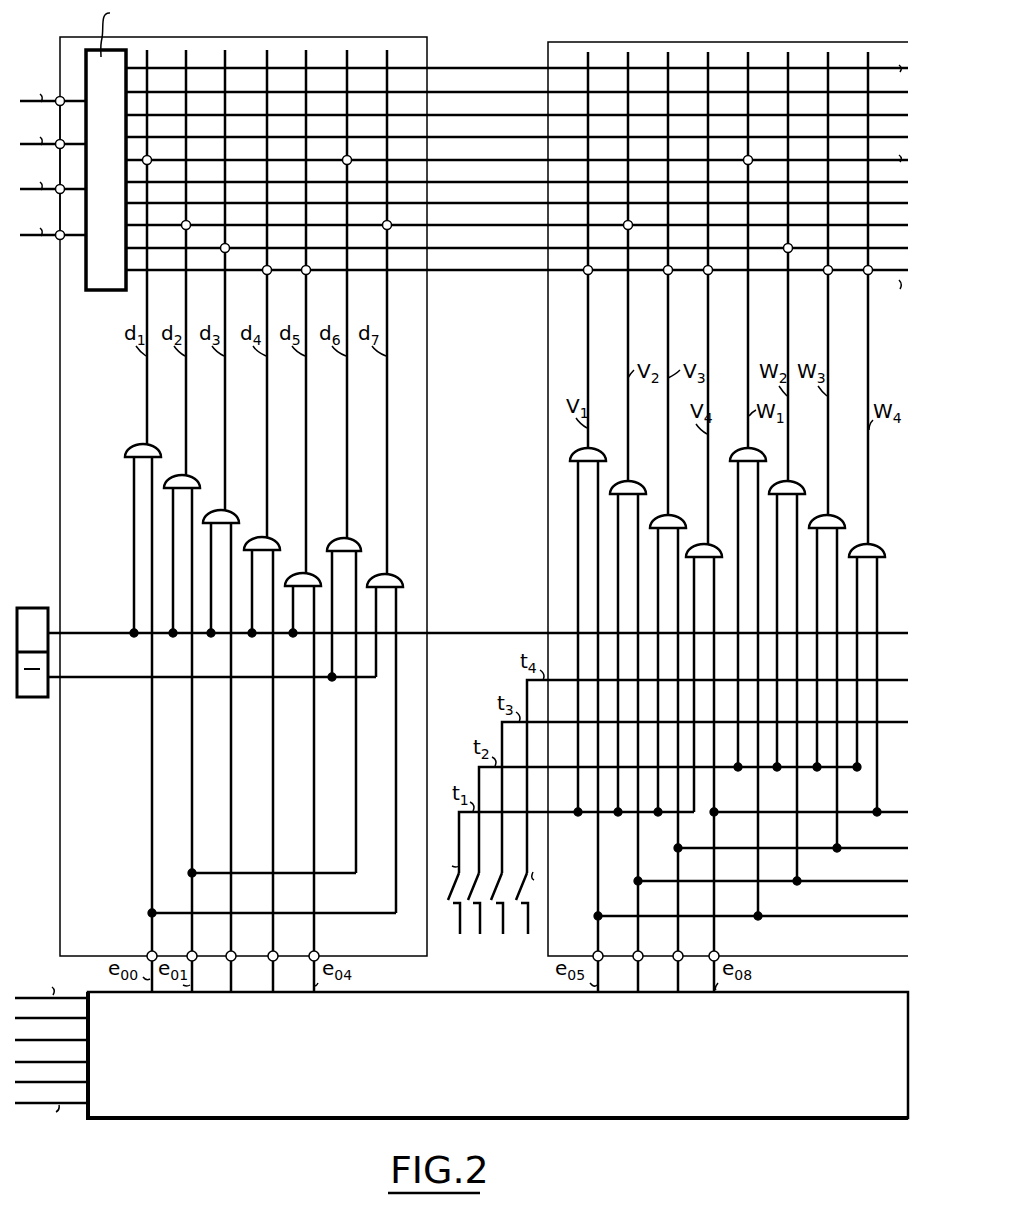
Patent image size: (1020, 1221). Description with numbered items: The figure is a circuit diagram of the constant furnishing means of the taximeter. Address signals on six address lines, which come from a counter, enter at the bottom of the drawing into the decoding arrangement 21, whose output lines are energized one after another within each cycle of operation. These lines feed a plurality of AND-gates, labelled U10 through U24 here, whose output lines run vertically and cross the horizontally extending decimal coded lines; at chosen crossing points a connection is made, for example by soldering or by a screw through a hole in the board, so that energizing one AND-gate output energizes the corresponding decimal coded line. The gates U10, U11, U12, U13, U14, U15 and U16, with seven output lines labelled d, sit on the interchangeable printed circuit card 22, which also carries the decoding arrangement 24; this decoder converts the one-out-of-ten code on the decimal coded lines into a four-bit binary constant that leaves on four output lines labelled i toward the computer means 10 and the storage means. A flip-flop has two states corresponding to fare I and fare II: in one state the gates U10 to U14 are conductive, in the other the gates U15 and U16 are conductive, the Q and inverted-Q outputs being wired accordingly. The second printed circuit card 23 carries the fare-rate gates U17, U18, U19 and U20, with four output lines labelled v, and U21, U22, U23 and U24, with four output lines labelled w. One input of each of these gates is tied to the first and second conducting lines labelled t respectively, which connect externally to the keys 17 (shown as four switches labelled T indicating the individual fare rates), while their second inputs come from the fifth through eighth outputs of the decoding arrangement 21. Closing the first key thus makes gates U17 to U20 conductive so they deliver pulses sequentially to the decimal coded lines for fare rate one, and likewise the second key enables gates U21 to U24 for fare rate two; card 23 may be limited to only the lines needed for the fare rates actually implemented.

The computer means 10 is at (26, 607).
The keys 17 is at (474, 956).
The decoding arrangement 21 is at (521, 1066).
The printed circuit card 22 is at (60, 369).
The printed circuit card 23 is at (548, 369).
The decoding arrangement 24 is at (119, 177).
The AND-gate U10 is at (146, 452).
The AND-gate U11 is at (186, 484).
The AND-gate U12 is at (226, 519).
The AND-gate U13 is at (266, 546).
The AND-gate U14 is at (310, 580).
The AND-gate U15 is at (348, 546).
The AND-gate U16 is at (387, 583).
The AND-gate U17 is at (590, 457).
The AND-gate U18 is at (630, 490).
The AND-gate U19 is at (670, 524).
The AND-gate U20 is at (710, 553).
The AND-gate U21 is at (749, 457).
The AND-gate U22 is at (789, 490).
The AND-gate U23 is at (828, 524).
The AND-gate U24 is at (868, 556).